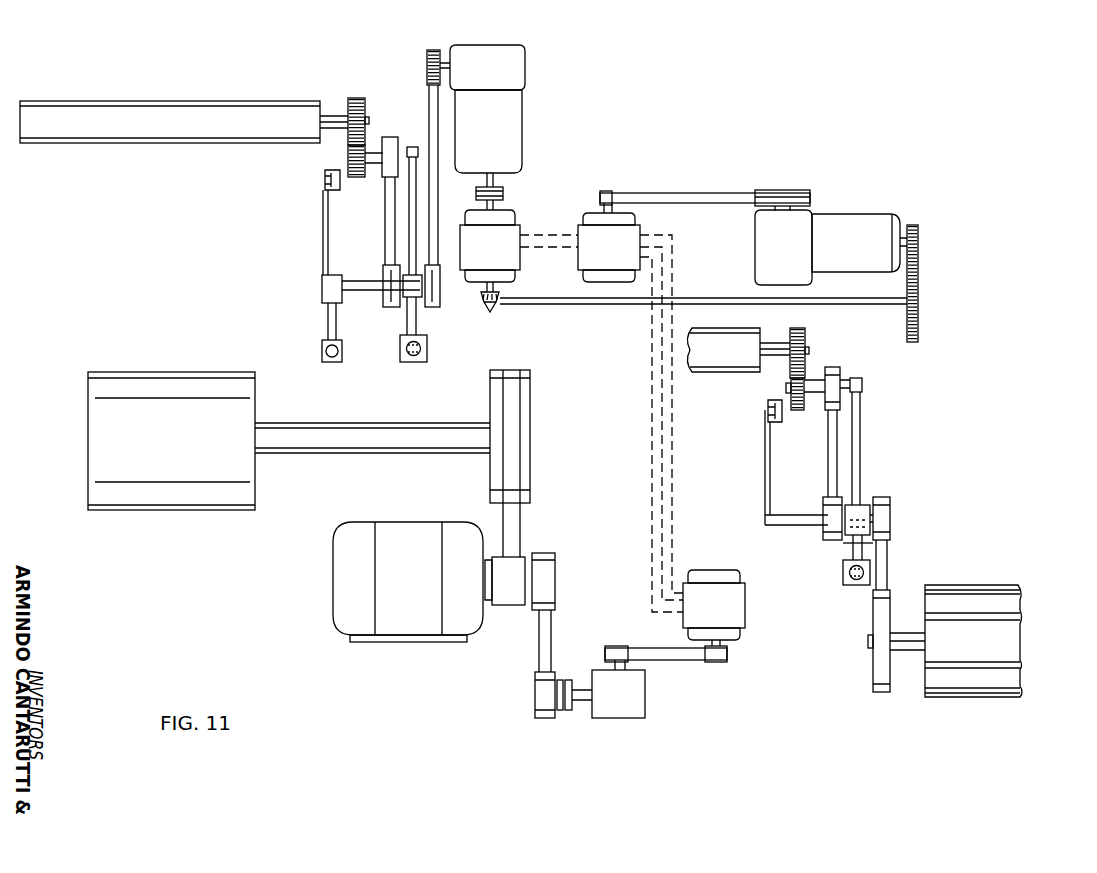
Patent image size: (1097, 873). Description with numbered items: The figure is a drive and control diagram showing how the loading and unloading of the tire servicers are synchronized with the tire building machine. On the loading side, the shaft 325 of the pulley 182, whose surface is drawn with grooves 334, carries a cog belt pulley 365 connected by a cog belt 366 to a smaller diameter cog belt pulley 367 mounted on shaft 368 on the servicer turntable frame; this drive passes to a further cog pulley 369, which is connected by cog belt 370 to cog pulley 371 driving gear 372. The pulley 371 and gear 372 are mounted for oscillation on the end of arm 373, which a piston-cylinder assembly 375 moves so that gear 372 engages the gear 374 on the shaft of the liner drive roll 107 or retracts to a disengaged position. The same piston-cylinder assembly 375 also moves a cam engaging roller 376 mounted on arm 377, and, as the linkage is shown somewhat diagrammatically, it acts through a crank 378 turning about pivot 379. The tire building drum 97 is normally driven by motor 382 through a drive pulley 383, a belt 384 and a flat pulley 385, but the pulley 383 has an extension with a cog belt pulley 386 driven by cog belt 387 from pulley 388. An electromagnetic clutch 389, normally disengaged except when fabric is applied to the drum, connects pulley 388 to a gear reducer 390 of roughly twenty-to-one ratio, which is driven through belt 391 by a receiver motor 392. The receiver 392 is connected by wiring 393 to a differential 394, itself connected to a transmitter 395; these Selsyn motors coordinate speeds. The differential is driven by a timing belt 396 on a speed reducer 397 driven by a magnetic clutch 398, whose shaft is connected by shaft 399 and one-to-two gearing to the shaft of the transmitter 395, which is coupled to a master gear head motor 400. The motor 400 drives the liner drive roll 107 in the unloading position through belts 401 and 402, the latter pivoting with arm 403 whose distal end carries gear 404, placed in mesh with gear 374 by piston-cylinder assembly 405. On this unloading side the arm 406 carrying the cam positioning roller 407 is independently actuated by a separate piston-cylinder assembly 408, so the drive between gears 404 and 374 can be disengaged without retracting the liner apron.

The tire building drum 97 is at (197, 510).
The liner drive roll 107 is at (130, 143).
The pulley 182 is at (984, 576).
The shaft 325 is at (905, 652).
The grooves 334 is at (1000, 632).
The cog belt pulley 365 is at (873, 672).
The cog belt 366 is at (889, 568).
The cog belt pulley 367 is at (890, 511).
The shaft 368 is at (788, 520).
The cog pulley 369 is at (843, 536).
The cog belt 370 is at (828, 480).
The cog pulley 371 is at (842, 373).
The gear 372 is at (800, 411).
The arm 373 is at (862, 430).
The gear 374 is at (357, 98).
The piston-cylinder assembly 375 is at (855, 586).
The cam engaging roller 376 is at (768, 416).
The arm 377 is at (765, 476).
The crank 378 is at (873, 543).
The pivot 379 is at (858, 516).
The motor 382 is at (400, 642).
The drive pulley 383 is at (497, 605).
The belt 384 is at (521, 532).
The flat pulley 385 is at (526, 458).
The cog belt pulley 386 is at (556, 572).
The cog belt 387 is at (540, 656).
The pulley 388 is at (536, 712).
The electromagnetic clutch 389 is at (563, 711).
The gear reducer 390 is at (646, 701).
The belt 391 is at (670, 661).
The receiver motor 392 is at (735, 612).
The wiring 393 is at (652, 440).
The differential 394 is at (635, 232).
The transmitter 395 is at (518, 230).
The timing belt 396 is at (701, 193).
The speed reducer 397 is at (760, 256).
The magnetic clutch 398 is at (865, 215).
The shaft 399 is at (600, 306).
The master gear head motor 400 is at (513, 133).
The belt 401 is at (438, 200).
The belt 402 is at (388, 228).
The arm 403 is at (412, 147).
The gear 404 is at (348, 149).
The piston-cylinder assembly 405 is at (428, 352).
The arm 406 is at (322, 245).
The cam positioning roller 407 is at (325, 184).
The piston-cylinder assembly 408 is at (343, 358).